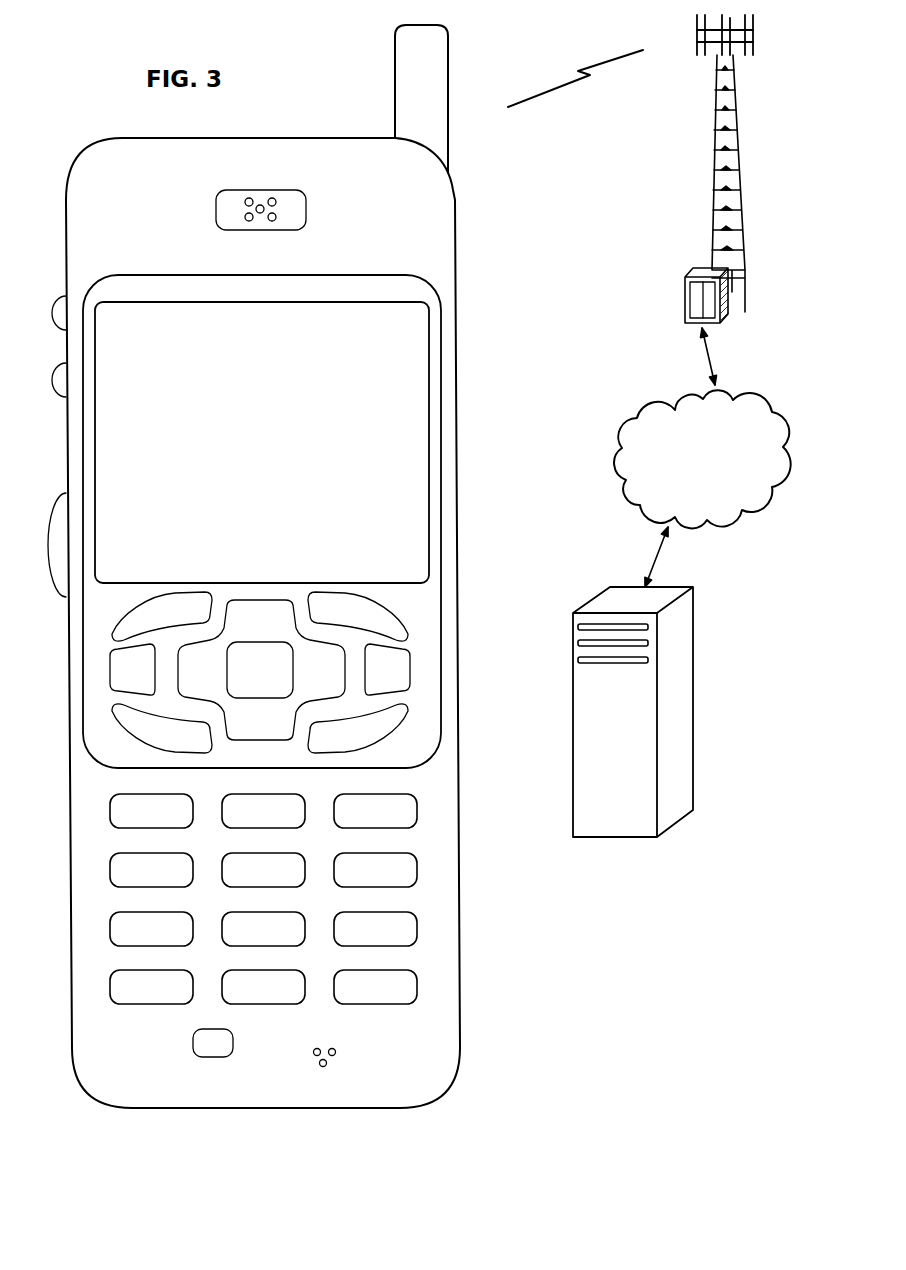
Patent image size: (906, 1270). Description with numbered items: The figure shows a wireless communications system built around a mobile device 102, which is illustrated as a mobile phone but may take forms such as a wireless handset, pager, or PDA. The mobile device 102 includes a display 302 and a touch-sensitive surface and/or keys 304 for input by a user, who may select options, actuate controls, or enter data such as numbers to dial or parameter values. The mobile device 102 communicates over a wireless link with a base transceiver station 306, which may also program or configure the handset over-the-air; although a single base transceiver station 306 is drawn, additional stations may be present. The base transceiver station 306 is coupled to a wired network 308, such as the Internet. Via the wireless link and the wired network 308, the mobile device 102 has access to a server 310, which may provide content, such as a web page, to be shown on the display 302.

The mobile device 102 is at (291, 581).
The display 302 is at (423, 313).
The keys 304 is at (468, 1014).
The base transceiver station 306 is at (712, 182).
The wired network 308 is at (627, 503).
The server 310 is at (610, 837).